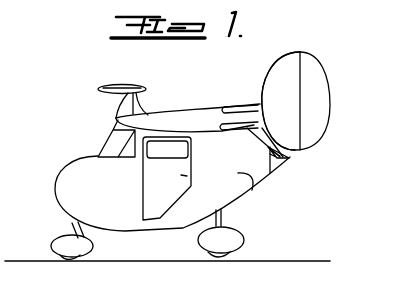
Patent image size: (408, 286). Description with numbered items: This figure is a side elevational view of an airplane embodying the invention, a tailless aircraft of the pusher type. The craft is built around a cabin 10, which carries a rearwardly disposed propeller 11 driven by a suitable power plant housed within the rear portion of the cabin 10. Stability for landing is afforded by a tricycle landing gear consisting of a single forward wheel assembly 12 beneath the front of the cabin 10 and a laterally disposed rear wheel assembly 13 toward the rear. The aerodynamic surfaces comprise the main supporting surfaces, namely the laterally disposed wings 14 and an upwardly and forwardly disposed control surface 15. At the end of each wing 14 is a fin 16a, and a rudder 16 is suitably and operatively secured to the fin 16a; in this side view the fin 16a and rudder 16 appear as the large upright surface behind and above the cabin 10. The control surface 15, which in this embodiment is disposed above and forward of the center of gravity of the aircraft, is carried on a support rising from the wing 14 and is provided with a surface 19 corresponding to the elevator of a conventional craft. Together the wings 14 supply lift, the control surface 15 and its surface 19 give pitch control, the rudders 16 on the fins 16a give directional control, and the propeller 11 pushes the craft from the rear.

The cabin 10 is at (254, 195).
The propeller 11 is at (285, 158).
The forward wheel assembly 12 is at (62, 243).
The rear wheel assembly 13 is at (237, 243).
The wing 14 is at (190, 122).
The control surface 15 is at (100, 91).
The rudder 16 is at (312, 97).
The fin 16a is at (284, 68).
The surface 19 is at (143, 89).